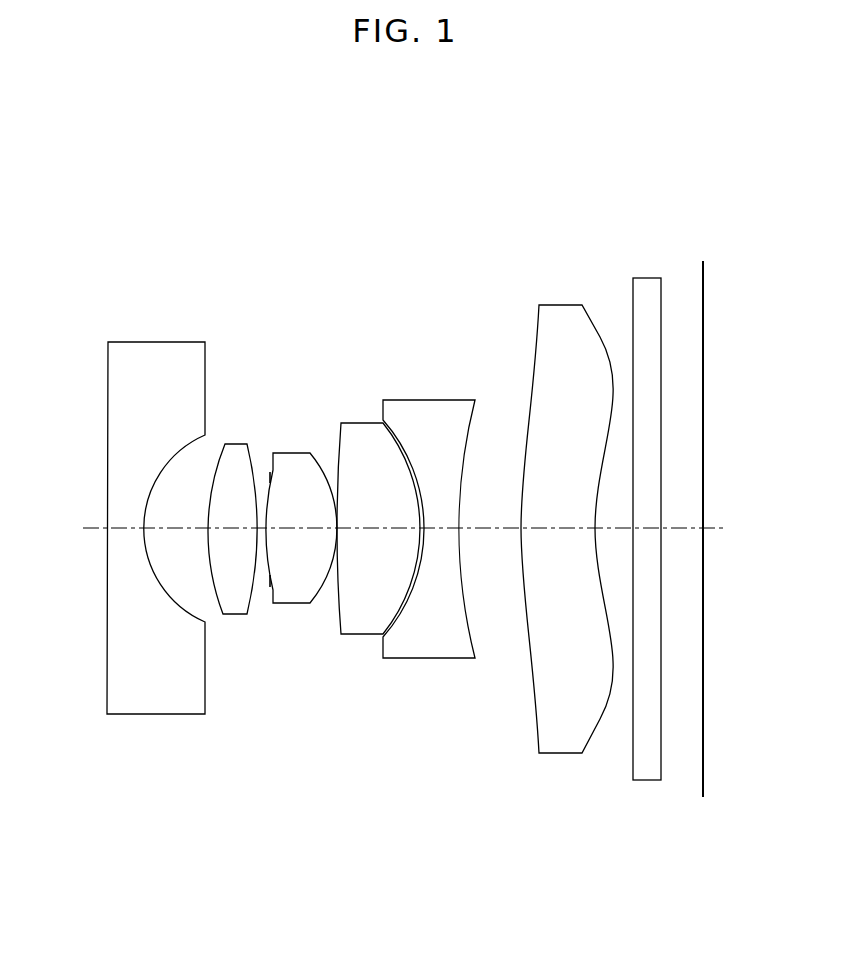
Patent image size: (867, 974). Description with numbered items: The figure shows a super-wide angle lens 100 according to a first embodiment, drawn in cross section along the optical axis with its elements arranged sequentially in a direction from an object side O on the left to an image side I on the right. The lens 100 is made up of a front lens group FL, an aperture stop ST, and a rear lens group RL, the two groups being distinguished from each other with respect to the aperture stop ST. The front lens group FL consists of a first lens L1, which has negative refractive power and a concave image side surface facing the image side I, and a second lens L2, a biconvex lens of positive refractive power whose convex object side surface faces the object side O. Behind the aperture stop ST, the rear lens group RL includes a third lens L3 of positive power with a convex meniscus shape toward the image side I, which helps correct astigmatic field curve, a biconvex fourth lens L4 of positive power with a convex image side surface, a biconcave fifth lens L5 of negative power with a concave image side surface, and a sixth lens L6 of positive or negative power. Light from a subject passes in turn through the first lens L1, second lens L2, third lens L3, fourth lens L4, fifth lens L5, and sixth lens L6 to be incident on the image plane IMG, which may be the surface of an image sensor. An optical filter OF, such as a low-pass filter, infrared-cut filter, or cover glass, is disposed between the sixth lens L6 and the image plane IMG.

The super-wide angle lens 100 is at (112, 209).
The front lens group FL is at (112, 243).
The rear lens group RL is at (273, 243).
The first lens L1 is at (157, 352).
The second lens L2 is at (237, 456).
The third lens L3 is at (292, 465).
The fourth lens L4 is at (362, 436).
The fifth lens L5 is at (430, 412).
The sixth lens L6 is at (562, 316).
The aperture stop ST is at (270, 588).
The optical filter OF is at (649, 292).
The image plane IMG is at (705, 277).
The object side O is at (394, 528).
The image side I is at (739, 528).